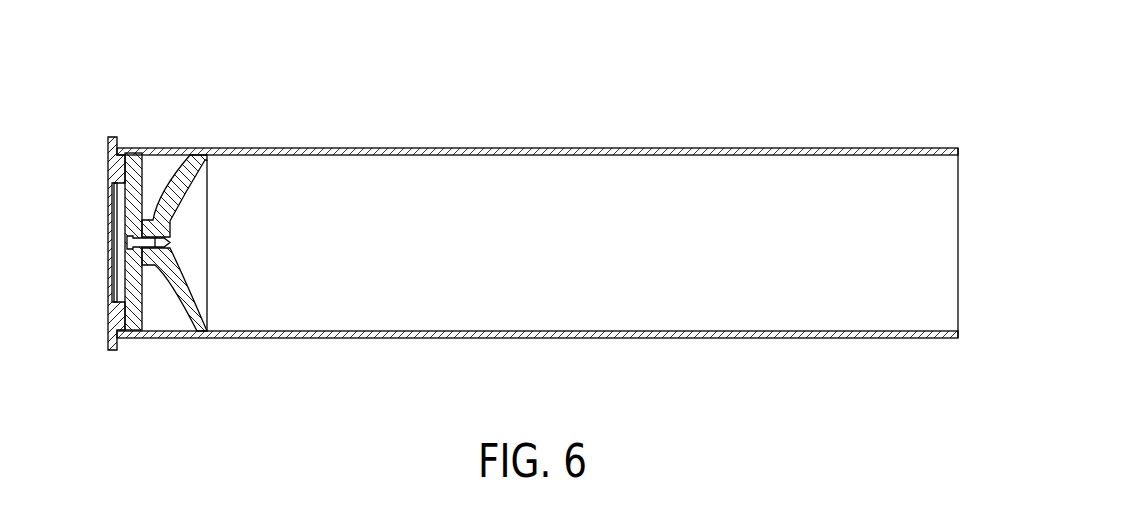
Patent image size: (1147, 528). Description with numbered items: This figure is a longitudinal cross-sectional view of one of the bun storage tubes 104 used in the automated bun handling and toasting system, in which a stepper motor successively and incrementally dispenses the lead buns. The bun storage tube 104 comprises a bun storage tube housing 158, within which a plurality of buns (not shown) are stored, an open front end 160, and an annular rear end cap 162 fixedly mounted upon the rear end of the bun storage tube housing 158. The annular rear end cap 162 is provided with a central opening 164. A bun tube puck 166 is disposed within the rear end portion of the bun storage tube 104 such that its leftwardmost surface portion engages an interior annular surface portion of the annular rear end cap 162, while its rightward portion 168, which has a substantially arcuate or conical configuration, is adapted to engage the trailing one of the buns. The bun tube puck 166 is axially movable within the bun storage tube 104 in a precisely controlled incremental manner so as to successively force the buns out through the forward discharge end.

The bun storage tube 104 is at (455, 148).
The bun storage tube housing 158 is at (588, 270).
The open front end 160 is at (958, 187).
The annular rear end cap 162 is at (117, 312).
The central opening 164 is at (122, 259).
The bun tube puck 166 is at (135, 178).
The rightward portion of the bun tube puck 168 is at (182, 290).